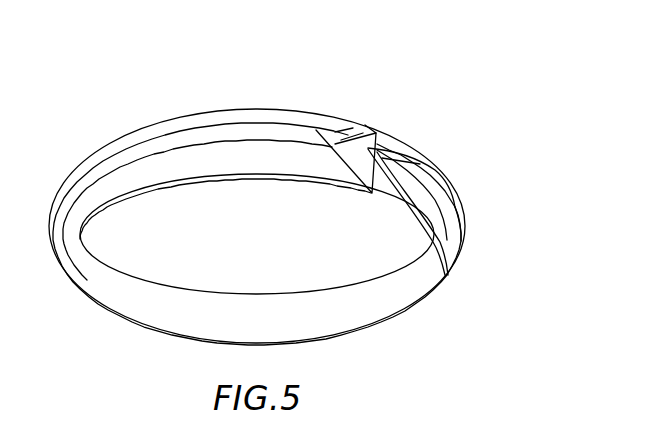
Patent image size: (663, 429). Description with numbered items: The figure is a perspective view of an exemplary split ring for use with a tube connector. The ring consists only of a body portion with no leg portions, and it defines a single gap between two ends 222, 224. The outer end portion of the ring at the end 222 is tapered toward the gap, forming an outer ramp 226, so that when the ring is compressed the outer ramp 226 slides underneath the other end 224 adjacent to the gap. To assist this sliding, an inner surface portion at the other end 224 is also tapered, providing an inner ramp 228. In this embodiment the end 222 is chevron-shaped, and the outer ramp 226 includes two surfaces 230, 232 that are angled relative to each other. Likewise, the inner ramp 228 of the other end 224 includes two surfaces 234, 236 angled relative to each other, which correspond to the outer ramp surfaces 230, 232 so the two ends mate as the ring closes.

The end 222 is at (317, 130).
The other end 224 is at (370, 148).
The outer ramp 226 is at (368, 147).
The inner ramp 228 is at (459, 198).
The outer ramp surface 230 is at (365, 125).
The outer ramp surface 232 is at (338, 165).
The inner ramp surface 234 is at (408, 144).
The inner ramp surface 236 is at (403, 197).